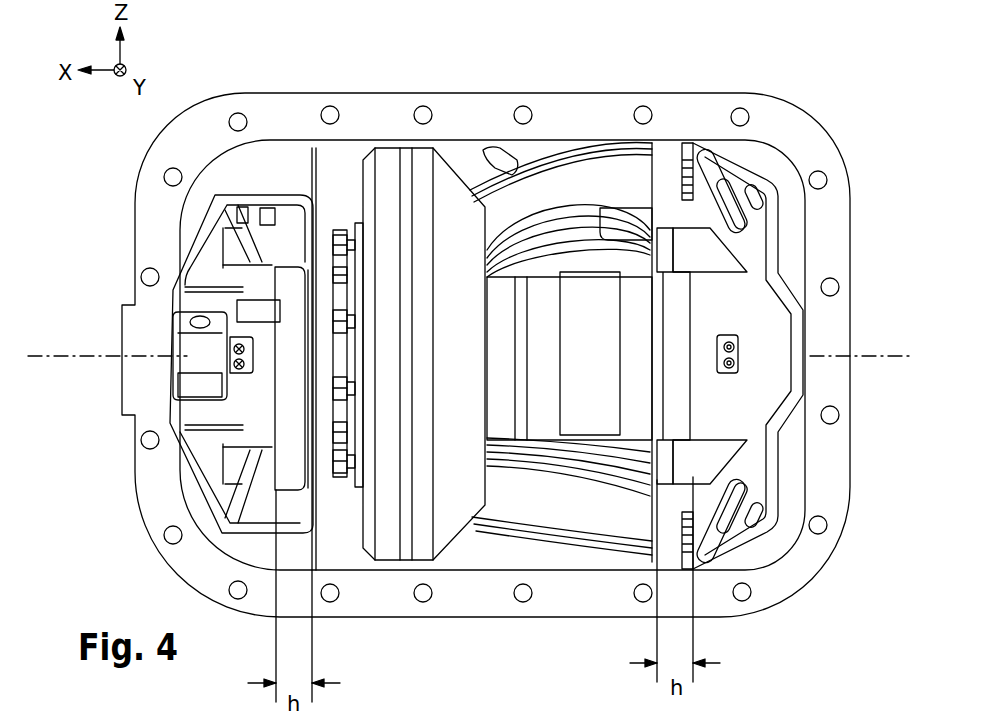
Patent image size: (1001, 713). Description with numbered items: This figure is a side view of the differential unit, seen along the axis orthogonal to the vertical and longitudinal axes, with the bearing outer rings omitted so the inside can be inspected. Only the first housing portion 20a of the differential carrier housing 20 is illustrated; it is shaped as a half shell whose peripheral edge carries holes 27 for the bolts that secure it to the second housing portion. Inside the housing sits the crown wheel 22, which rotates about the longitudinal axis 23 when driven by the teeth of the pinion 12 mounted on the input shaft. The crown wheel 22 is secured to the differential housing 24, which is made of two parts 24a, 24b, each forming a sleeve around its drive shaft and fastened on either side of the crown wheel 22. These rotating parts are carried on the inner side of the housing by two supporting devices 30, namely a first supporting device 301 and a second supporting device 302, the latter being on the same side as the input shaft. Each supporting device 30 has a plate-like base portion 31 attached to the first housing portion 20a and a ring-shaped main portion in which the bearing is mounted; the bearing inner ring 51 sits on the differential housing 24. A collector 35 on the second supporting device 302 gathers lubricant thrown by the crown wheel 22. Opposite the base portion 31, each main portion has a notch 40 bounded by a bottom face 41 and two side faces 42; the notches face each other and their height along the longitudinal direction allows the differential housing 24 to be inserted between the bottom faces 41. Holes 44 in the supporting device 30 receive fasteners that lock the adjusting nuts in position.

The pinion 12 is at (590, 523).
The differential carrier housing 20 is at (481, 315).
The first housing portion 20a is at (818, 118).
The crown wheel 22 is at (455, 222).
The longitudinal axis 23 is at (50, 356).
The differential housing 24 is at (441, 361).
The differential housing part 24a is at (540, 410).
The differential housing part 24b is at (325, 303).
The holes 27 is at (523, 106).
The supporting device 30 is at (437, 412).
The first supporting device 301 is at (200, 490).
The second supporting device 302 is at (765, 545).
The base portion 31 is at (220, 190).
The collector 35 is at (622, 218).
The notch 40 is at (556, 365).
The bottom face 41 is at (672, 322).
The side faces 42 is at (839, 415).
The holes 44 is at (234, 352).
The inner ring 51 is at (488, 337).